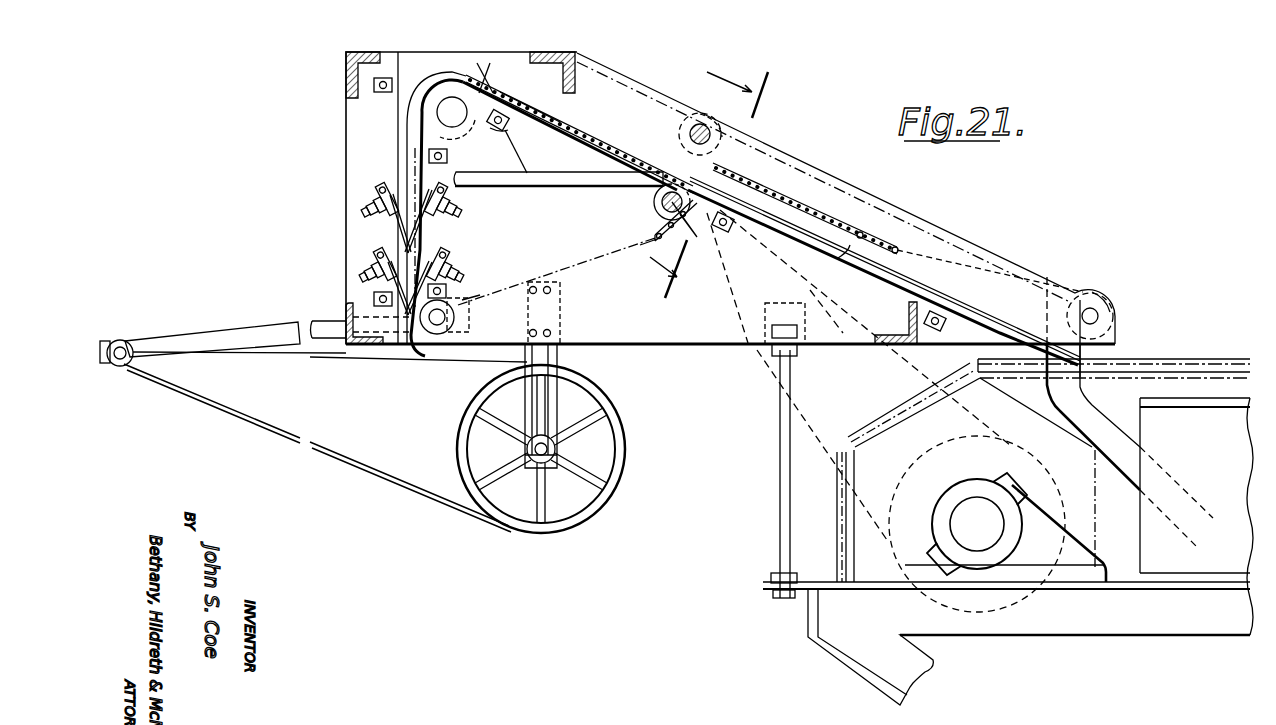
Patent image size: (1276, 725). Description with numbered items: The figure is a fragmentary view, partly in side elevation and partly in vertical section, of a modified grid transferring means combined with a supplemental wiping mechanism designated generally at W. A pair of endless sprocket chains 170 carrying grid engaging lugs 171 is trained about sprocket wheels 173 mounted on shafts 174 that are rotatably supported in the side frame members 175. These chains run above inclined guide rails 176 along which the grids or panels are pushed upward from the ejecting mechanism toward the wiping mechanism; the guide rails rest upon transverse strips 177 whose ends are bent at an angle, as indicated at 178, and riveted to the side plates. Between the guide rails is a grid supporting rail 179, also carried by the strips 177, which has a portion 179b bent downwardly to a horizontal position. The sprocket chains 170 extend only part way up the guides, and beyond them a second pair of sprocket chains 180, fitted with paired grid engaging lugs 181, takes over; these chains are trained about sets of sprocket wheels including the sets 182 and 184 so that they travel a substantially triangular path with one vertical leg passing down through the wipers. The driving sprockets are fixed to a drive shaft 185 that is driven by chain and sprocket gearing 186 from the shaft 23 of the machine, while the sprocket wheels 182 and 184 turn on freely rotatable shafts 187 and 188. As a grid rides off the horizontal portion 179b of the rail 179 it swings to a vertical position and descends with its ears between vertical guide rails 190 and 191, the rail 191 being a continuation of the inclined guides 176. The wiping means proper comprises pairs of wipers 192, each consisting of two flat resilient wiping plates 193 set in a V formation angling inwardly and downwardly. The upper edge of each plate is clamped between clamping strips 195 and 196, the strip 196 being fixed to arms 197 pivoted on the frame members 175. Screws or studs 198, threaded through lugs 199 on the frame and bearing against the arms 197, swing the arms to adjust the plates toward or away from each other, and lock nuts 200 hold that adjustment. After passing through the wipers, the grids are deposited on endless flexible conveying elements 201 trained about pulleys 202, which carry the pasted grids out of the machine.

The shaft of the machine 23 is at (968, 522).
The endless sprocket chains 170 is at (897, 246).
The grid engaging lugs 171 is at (860, 235).
The sprocket wheels 173 is at (1080, 290).
The shafts 174 is at (1092, 313).
The side frame members 175 is at (1011, 270).
The guide rails 176 is at (722, 137).
The strips 177 is at (508, 122).
The bent ends of strips 178 is at (725, 237).
The grid supporting rail 179 is at (853, 258).
The horizontal portion of supporting rail 179b is at (567, 187).
The sprocket chains 180 is at (573, 123).
The grid engaging lugs 181 is at (592, 114).
The sprocket wheels 182 is at (482, 130).
The sprocket wheels 184 is at (460, 304).
The drive shaft 185 is at (652, 245).
The chain and sprocket gearing 186 is at (660, 213).
The shaft 187 is at (455, 105).
The shaft 188 is at (436, 340).
The vertical guide rail 190 is at (400, 68).
The vertical guide rail 191 is at (455, 82).
The wipers 192 is at (392, 223).
The wiping plates 193 is at (395, 238).
The clamping strip 195 is at (420, 198).
The clamping strip 196 is at (441, 220).
The arms 197 is at (448, 192).
The screws or studs 198 is at (358, 217).
The lugs 199 is at (374, 188).
The lock nuts 200 is at (362, 206).
The endless flexible conveying elements 201 is at (388, 478).
The pulleys 202 is at (122, 368).
The wiping mechanism W is at (390, 120).